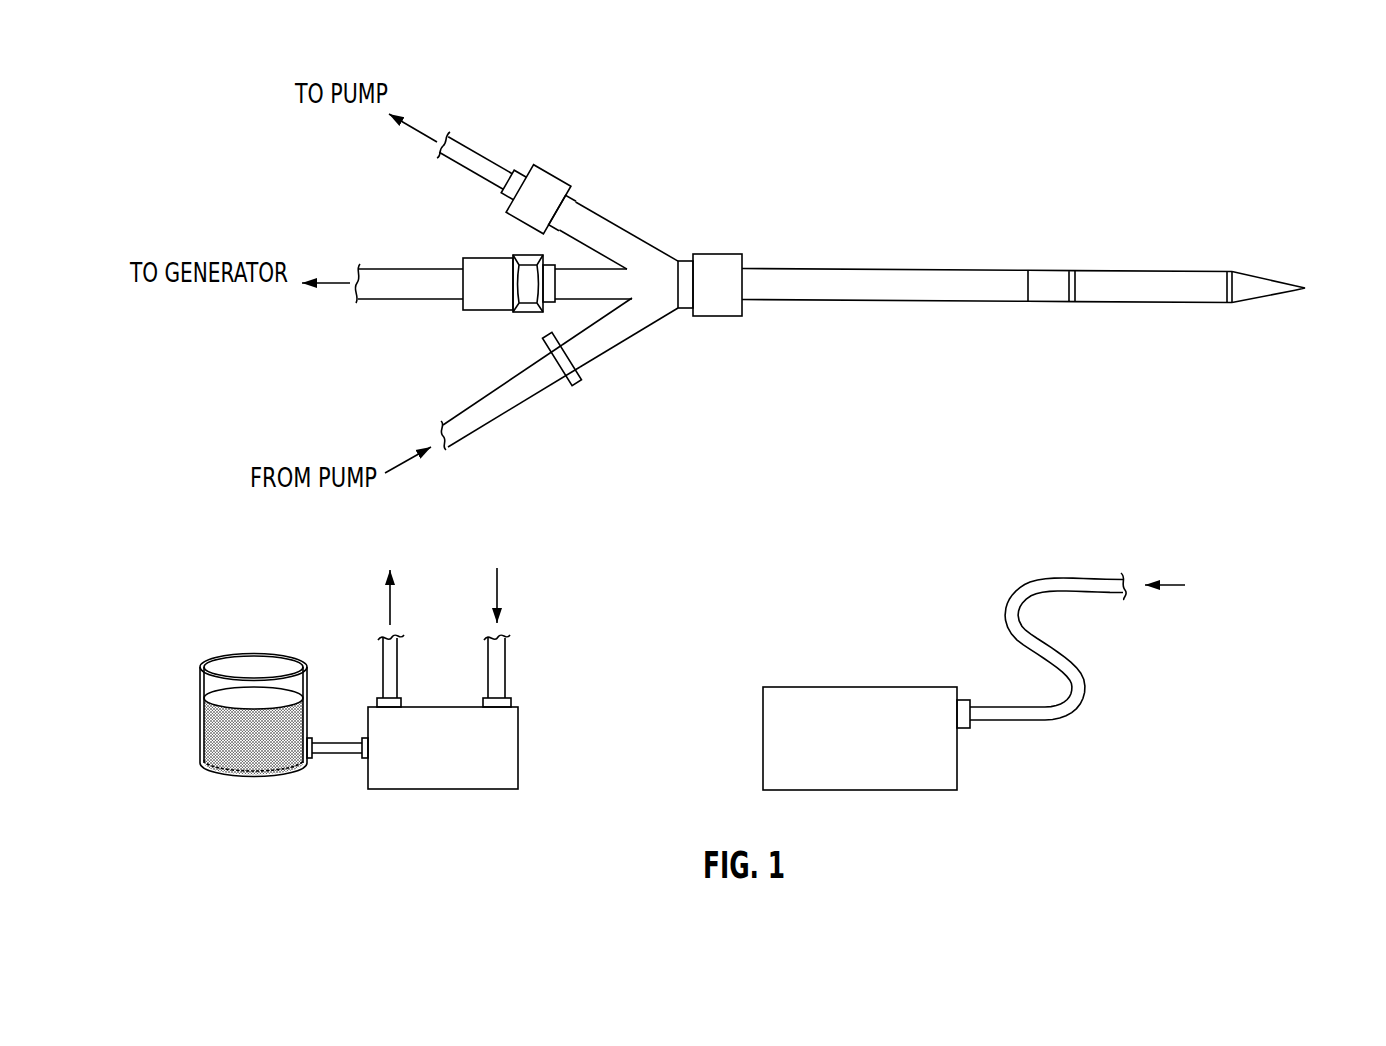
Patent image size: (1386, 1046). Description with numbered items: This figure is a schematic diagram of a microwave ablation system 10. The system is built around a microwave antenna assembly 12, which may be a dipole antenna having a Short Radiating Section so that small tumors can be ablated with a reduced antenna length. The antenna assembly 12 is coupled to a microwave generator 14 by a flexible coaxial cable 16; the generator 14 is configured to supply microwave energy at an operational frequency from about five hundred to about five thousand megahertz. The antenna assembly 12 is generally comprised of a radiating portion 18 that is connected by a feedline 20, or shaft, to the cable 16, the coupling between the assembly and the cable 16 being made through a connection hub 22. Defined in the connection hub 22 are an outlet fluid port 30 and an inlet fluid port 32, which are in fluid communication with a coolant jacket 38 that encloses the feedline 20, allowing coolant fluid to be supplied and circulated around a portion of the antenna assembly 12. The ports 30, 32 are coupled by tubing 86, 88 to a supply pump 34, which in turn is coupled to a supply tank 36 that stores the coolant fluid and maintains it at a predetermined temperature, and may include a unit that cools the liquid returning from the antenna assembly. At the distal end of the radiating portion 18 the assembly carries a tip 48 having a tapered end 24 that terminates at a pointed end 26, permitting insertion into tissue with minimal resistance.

The microwave ablation system 10 is at (1197, 130).
The microwave antenna assembly 12 is at (771, 198).
The microwave generator 14 is at (197, 311).
The flexible coaxial cable 16 is at (413, 268).
The radiating portion 18 is at (1147, 258).
The feedline 20 is at (939, 258).
The connection hub 22 is at (646, 349).
The tapered end 24 is at (1258, 272).
The pointed end 26 is at (1305, 288).
The outlet fluid port 30 is at (552, 187).
The inlet fluid port 32 is at (578, 379).
The supply pump 34 is at (328, 130).
The supply tank 36 is at (200, 715).
The coolant jacket 38 is at (843, 268).
The tip 48 is at (1256, 302).
The inflow tube from pump 86 is at (500, 408).
The outflow tube to pump 88 is at (472, 153).